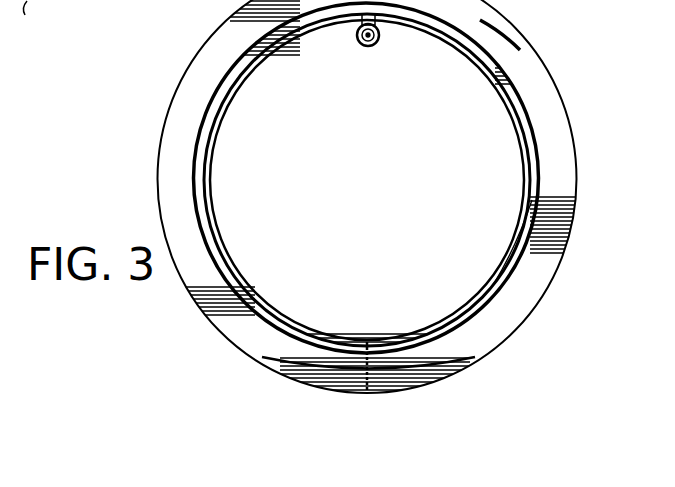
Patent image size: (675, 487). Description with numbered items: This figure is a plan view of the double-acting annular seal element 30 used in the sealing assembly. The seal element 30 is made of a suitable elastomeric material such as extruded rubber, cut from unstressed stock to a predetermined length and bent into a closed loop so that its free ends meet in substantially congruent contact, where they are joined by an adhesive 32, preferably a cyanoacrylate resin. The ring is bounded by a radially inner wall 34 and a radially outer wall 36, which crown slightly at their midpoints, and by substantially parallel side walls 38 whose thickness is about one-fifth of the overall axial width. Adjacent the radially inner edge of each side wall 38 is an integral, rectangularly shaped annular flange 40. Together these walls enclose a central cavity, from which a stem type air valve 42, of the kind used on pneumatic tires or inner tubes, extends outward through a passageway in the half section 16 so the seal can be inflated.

The half section 16 is at (37, 13).
The double-acting annular seal element 30 is at (566, 250).
The adhesive 32 is at (373, 348).
The inner wall 34 is at (513, 105).
The outer wall 36 is at (567, 118).
The side walls 38 is at (523, 76).
The annular flange 40 is at (523, 250).
The stem type air valve 42 is at (359, 42).